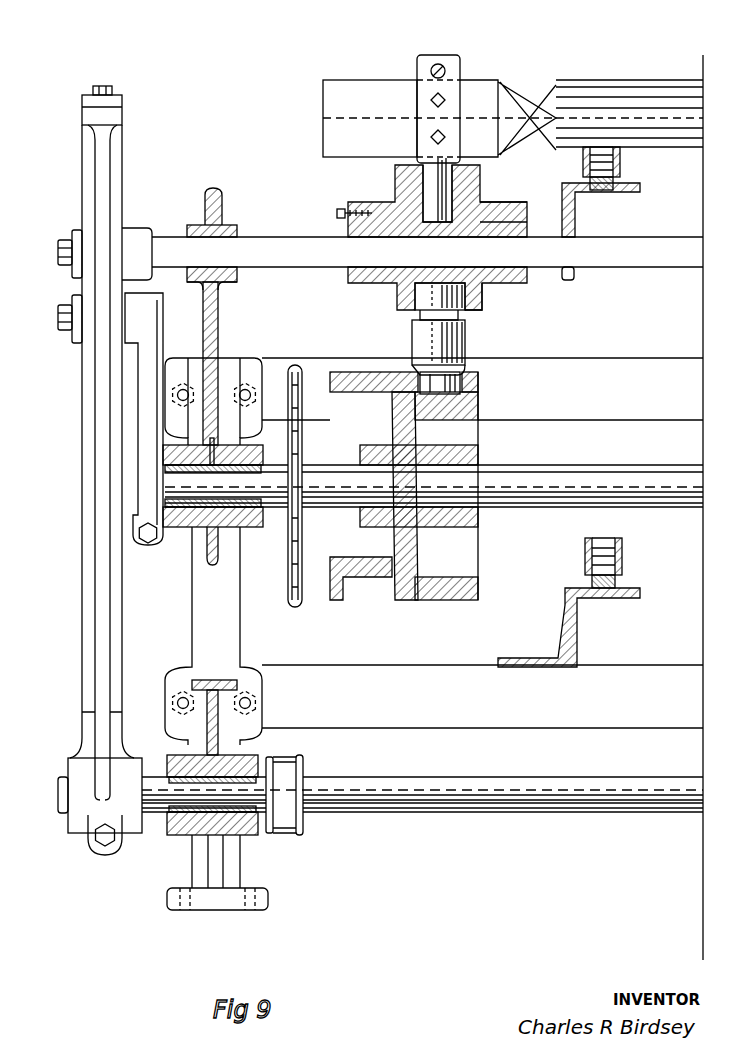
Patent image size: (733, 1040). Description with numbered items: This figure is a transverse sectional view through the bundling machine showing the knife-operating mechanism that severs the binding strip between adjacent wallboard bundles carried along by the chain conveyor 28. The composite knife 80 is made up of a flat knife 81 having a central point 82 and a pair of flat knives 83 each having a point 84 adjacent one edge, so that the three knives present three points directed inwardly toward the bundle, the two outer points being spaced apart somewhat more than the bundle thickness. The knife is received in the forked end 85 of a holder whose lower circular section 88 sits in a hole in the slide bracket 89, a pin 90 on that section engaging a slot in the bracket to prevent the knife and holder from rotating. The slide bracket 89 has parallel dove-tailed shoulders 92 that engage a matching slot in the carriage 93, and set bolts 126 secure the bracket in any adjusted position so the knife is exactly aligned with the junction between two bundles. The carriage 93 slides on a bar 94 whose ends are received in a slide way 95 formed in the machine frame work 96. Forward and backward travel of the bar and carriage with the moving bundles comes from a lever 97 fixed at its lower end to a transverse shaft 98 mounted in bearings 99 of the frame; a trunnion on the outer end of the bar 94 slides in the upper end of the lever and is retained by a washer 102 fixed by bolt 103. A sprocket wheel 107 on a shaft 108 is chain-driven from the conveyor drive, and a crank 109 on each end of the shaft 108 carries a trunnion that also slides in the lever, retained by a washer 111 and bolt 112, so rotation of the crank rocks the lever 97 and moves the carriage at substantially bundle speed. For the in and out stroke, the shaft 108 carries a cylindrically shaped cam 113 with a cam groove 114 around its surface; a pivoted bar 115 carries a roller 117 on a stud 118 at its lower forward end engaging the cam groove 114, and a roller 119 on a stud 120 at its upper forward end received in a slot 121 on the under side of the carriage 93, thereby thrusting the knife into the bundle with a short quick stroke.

The chain conveyor 28 is at (622, 161).
The composite knife 80 is at (333, 80).
The flat knife 81 is at (333, 93).
The central point 82 is at (570, 92).
The flat knives 83 is at (512, 82).
The point 84 is at (535, 105).
The forked end 85 is at (462, 70).
The circular section 88 is at (447, 216).
The slide bracket 89 is at (400, 183).
The pin 90 is at (440, 178).
The dove-tailed shoulders 92 is at (500, 216).
The carriage 93 is at (520, 222).
The bar 94 is at (280, 237).
The slide way 95 is at (224, 226).
The machine frame work 96 is at (200, 225).
The lever 97 is at (118, 592).
The transverse shaft 98 is at (336, 812).
The bearings 99 is at (175, 835).
The washer 102 is at (78, 232).
The bolt 103 is at (57, 252).
The sprocket wheel 107 is at (288, 603).
The shaft 108 is at (597, 485).
The crank 109 is at (135, 425).
The washer 111 is at (78, 300).
The bolt 112 is at (57, 318).
The cylindrically shaped cam 113 is at (460, 552).
The cam groove 114 is at (377, 578).
The bar 115 is at (432, 333).
The roller 117 is at (470, 372).
The stud 118 is at (428, 369).
The roller 119 is at (430, 291).
The stud 120 is at (462, 314).
The slot 121 is at (484, 293).
The set bolts 126 is at (338, 213).